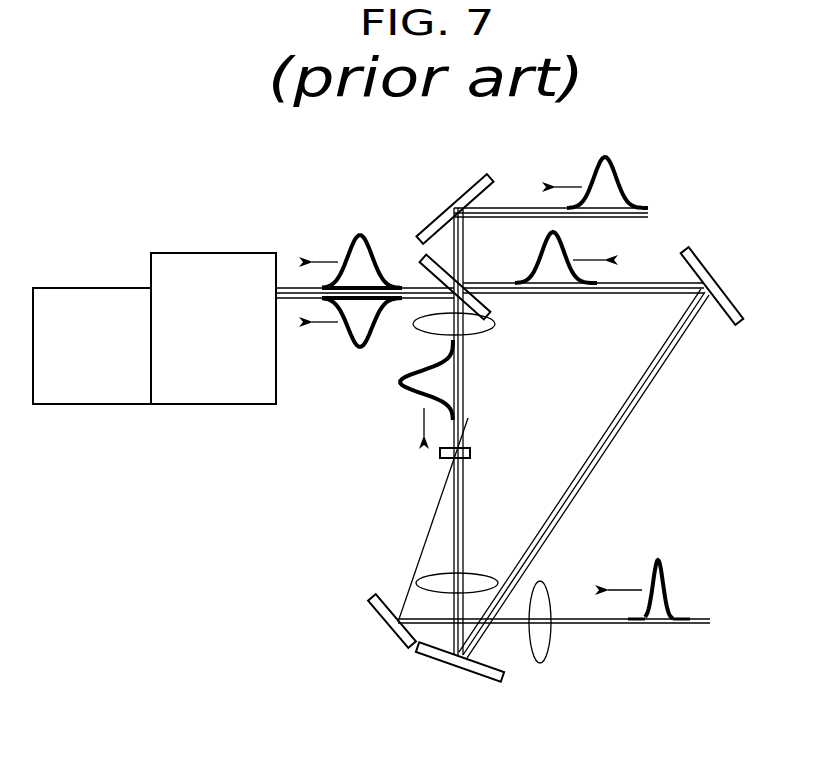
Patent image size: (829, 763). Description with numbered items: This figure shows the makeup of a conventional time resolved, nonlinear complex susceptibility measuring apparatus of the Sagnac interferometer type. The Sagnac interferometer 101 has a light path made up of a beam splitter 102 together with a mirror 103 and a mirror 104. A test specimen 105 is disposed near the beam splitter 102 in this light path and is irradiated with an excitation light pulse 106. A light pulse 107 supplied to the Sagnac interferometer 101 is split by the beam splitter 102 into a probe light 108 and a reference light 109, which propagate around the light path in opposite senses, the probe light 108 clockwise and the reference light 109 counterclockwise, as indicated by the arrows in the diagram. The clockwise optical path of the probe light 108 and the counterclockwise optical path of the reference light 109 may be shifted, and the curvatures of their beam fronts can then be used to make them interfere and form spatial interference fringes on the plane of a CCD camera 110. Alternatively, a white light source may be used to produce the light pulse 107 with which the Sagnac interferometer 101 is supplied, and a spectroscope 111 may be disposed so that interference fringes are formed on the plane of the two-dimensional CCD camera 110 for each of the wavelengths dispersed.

The Sagnac interferometer 101 is at (708, 104).
The beam splitter 102 is at (483, 302).
The mirror 103 is at (700, 263).
The mirror 104 is at (475, 673).
The test specimen 105 is at (470, 453).
The excitation light pulse 106 is at (658, 555).
The light pulse 107 is at (617, 175).
The probe light 108 is at (565, 248).
The reference light 109 is at (407, 383).
The CCD camera 110 is at (68, 288).
The spectroscope 111 is at (195, 253).